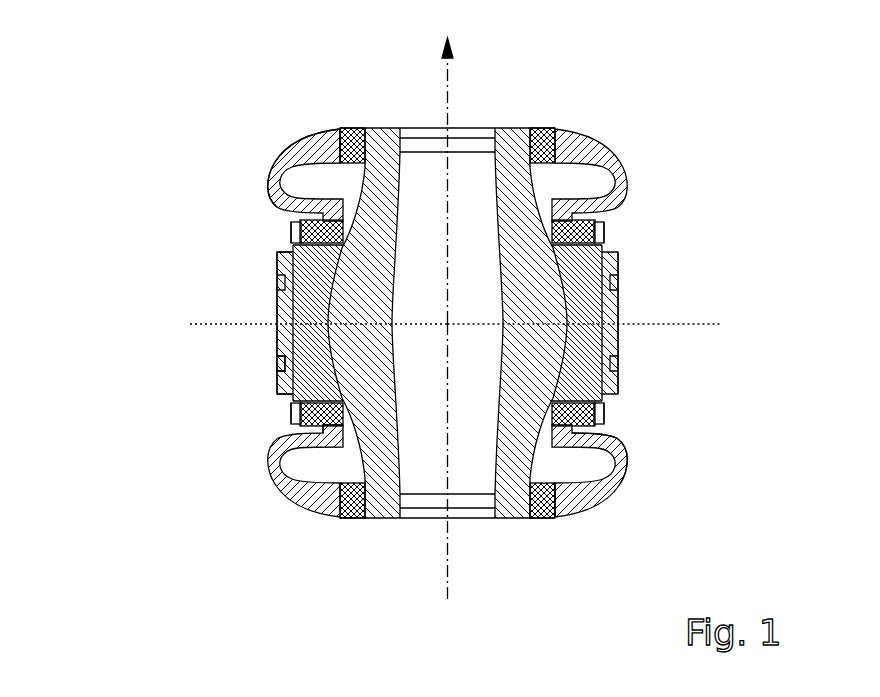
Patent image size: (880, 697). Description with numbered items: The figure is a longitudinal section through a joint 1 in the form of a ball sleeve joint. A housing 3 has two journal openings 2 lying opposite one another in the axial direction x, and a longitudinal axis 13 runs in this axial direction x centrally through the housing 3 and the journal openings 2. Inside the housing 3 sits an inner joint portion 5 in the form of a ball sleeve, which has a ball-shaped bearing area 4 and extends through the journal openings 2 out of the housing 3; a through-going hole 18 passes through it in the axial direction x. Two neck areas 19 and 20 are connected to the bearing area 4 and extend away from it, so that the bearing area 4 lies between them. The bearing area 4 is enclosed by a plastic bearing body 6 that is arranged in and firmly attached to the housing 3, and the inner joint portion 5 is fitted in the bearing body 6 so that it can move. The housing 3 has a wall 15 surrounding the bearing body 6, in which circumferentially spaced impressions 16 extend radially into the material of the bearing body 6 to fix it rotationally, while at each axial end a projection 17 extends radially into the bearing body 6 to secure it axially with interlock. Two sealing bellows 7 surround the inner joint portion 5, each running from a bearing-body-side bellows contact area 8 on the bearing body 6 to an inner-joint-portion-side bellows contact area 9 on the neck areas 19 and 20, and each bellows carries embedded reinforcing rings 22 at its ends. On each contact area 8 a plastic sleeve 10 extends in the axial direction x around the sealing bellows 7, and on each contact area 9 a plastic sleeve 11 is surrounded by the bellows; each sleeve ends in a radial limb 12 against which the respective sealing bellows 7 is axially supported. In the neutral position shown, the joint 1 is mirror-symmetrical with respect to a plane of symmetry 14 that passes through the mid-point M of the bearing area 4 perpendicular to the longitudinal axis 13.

The joint 1 is at (200, 78).
The journal openings 2 is at (622, 164).
The housing 3 is at (628, 368).
The bearing area 4 is at (618, 353).
The inner joint portion 5 is at (627, 483).
The bearing body 6 is at (300, 280).
The sealing bellows 7 is at (266, 190).
The bearing-body-side bellows contact area 8 is at (280, 225).
The inner-joint-portion-side bellows contact area 9 is at (384, 128).
The sleeve 10 is at (602, 236).
The sleeve 11 is at (512, 128).
The radial limb 12 is at (548, 130).
The longitudinal axis 13 is at (452, 592).
The plane of symmetry 14 is at (200, 326).
The wall 15 is at (278, 366).
The impressions 16 is at (287, 320).
The projection 17 is at (283, 260).
The through-going hole 18 is at (433, 482).
The neck area 19 is at (313, 507).
The neck area 20 is at (300, 143).
The reinforcing rings 22 is at (329, 128).
The mid-point M is at (456, 321).
The axial direction x is at (452, 84).